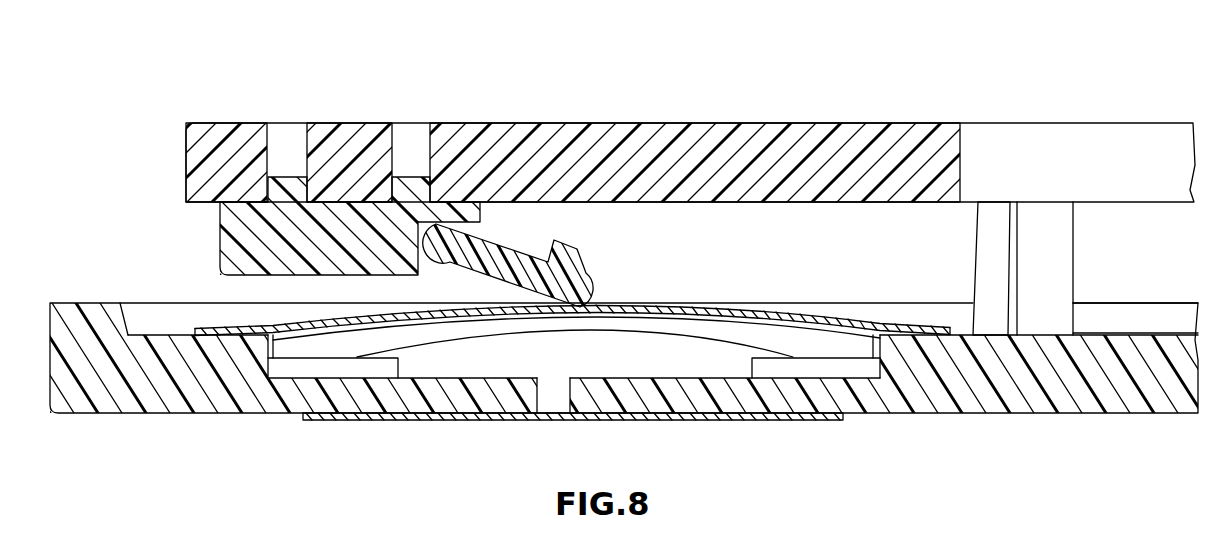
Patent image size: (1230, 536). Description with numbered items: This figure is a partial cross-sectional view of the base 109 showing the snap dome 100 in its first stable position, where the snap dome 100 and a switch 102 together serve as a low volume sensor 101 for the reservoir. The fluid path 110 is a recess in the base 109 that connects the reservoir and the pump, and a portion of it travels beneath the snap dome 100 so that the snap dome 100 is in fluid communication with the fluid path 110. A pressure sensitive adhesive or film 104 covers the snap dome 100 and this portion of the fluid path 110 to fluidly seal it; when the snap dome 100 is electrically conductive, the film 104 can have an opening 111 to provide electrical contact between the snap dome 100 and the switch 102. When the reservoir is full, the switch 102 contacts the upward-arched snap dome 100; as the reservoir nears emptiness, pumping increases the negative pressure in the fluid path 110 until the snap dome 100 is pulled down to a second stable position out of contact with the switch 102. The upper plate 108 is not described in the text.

The low volume sensor 101 is at (1030, 57).
The upper plate 108 is at (836, 121).
The switch 102 is at (220, 240).
The opening 111 is at (604, 285).
The film 104 is at (831, 322).
The snap dome 100 is at (748, 332).
The fluid path 110 is at (537, 350).
The base 109 is at (110, 405).